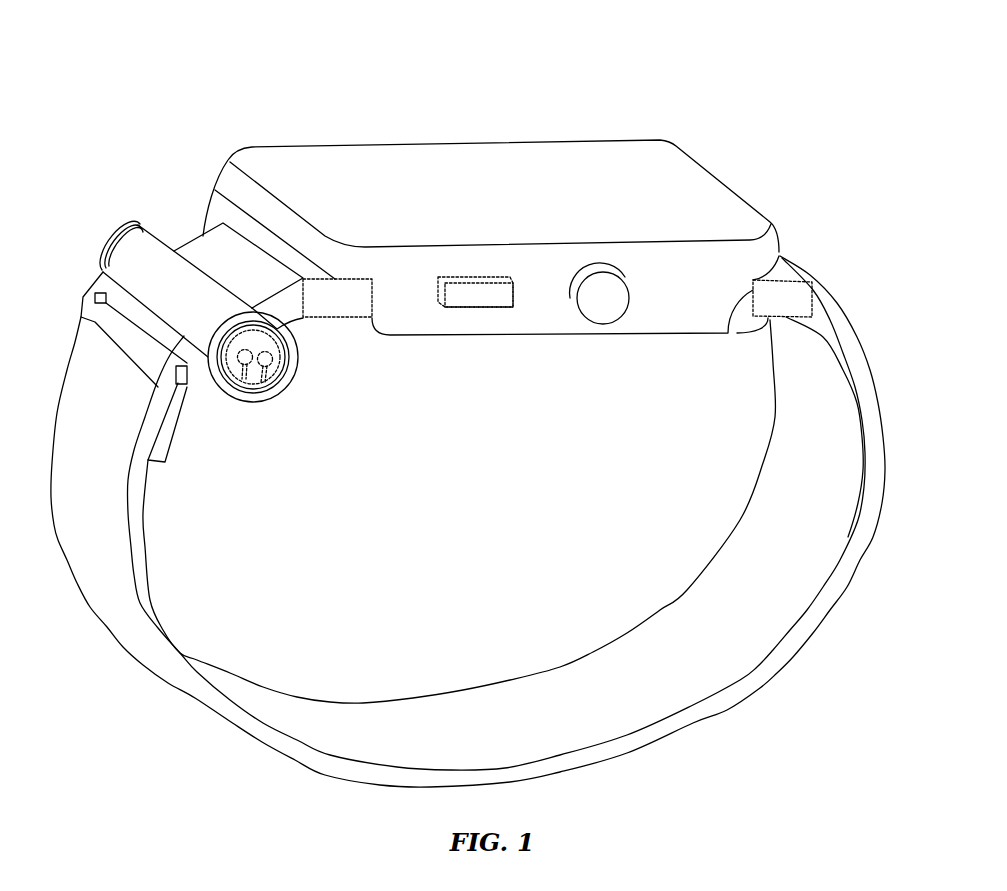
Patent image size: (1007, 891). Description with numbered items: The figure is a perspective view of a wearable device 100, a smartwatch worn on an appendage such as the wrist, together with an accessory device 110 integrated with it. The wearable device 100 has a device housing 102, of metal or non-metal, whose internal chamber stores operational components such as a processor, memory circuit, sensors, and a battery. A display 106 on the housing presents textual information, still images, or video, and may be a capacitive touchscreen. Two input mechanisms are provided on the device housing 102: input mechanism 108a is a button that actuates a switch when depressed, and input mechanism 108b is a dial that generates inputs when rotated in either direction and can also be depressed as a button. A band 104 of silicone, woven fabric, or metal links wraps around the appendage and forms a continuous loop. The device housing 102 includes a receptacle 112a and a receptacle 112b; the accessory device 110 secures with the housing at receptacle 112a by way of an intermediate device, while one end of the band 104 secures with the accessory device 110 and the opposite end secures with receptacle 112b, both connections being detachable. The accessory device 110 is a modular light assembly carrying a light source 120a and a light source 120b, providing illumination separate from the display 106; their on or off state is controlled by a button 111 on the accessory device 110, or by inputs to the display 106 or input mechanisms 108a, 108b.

The wearable device 100 is at (167, 65).
The device housing 102 is at (767, 243).
The band 104 is at (868, 350).
The display 106 is at (475, 158).
The input mechanism 108a is at (479, 308).
The input mechanism 108b is at (602, 307).
The accessory device 110 is at (164, 312).
The button 111 is at (98, 236).
The receptacle 112a is at (347, 318).
The receptacle 112b is at (730, 333).
The light source 120a is at (234, 381).
The light source 120b is at (273, 381).